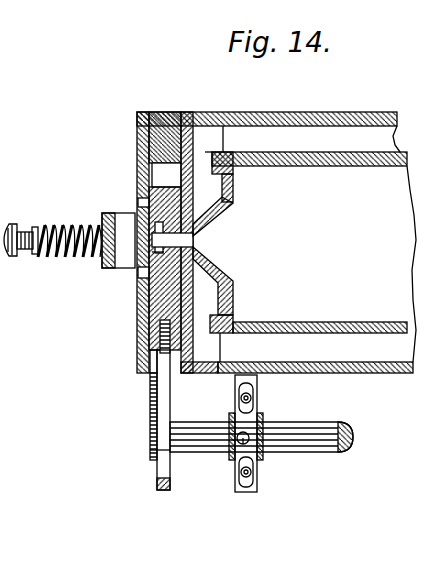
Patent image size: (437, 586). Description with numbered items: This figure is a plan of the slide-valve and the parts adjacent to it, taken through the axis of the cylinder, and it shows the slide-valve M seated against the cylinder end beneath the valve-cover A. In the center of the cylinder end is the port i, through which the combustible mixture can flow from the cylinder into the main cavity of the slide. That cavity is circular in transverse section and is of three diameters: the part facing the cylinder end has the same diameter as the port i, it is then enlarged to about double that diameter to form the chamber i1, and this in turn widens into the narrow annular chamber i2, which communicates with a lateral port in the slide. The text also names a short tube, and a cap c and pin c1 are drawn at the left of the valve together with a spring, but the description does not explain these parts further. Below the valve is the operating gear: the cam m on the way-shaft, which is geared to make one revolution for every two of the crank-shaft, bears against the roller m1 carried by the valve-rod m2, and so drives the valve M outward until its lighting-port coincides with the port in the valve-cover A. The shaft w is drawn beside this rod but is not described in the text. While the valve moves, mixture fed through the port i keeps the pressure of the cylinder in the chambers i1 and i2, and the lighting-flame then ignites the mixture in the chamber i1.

The valve-cover A is at (137, 176).
The slide-valve M is at (159, 288).
The spring cap c is at (69, 240).
The pin c1 is at (156, 232).
The port i is at (192, 224).
The chamber i1 is at (213, 281).
The annular chamber i2 is at (157, 258).
The cam m is at (162, 390).
The roller m1 is at (152, 425).
The valve-rod m2 is at (166, 411).
The shaft w is at (307, 437).